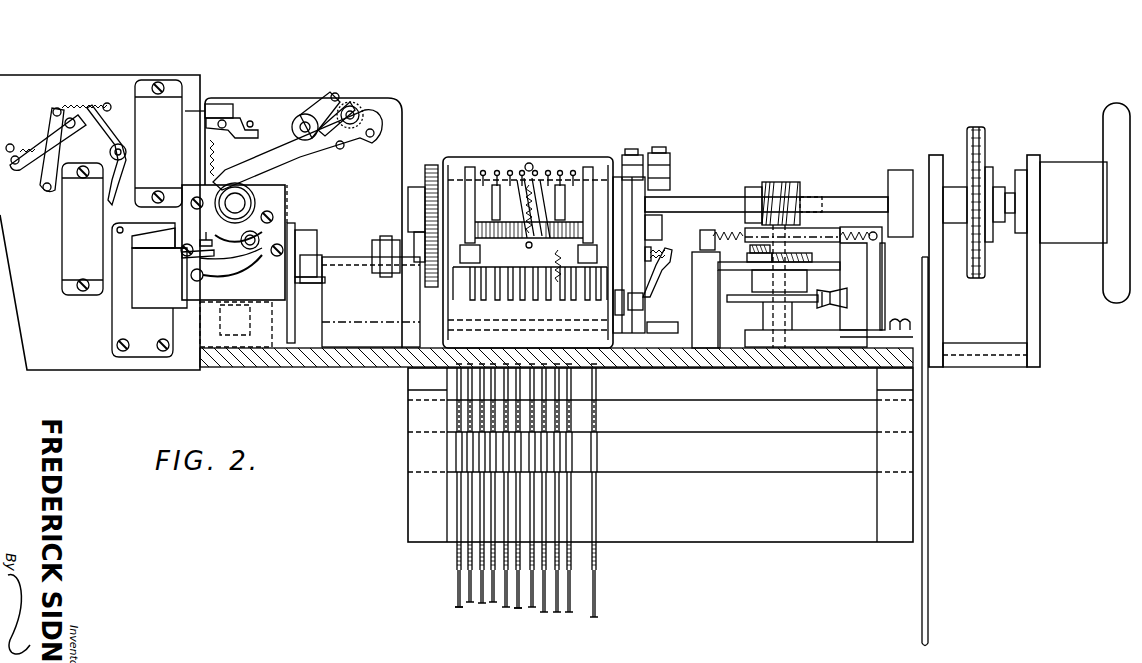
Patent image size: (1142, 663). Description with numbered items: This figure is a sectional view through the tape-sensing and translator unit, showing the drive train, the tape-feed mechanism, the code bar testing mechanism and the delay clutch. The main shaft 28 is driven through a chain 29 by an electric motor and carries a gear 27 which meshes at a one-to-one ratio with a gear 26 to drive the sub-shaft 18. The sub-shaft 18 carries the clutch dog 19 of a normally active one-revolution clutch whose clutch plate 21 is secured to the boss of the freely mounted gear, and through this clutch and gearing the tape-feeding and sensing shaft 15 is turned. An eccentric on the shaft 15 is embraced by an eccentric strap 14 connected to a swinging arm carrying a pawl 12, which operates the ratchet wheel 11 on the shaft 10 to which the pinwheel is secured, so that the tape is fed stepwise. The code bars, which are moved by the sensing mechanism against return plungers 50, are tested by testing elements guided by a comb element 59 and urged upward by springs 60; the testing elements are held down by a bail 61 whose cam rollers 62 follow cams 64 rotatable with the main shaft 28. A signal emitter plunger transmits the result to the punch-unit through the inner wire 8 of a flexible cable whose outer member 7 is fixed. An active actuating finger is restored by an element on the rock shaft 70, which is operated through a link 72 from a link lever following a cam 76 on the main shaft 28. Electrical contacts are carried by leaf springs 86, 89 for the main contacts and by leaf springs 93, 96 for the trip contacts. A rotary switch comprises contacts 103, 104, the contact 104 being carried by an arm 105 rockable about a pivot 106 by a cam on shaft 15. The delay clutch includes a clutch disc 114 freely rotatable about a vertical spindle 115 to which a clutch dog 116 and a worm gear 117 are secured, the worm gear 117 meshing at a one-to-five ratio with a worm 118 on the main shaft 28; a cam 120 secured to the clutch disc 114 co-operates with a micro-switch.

The outer member 7 is at (469, 571).
The inner wire 8 is at (519, 607).
The shaft 10 is at (343, 127).
The ratchet wheel 11 is at (403, 121).
The pawl 12 is at (352, 125).
The eccentric strap 14 is at (323, 157).
The tape-feeding and sensing shaft 15 is at (237, 200).
The sub-shaft 18 is at (355, 250).
The clutch dog 19 is at (312, 272).
The clutch plate 21 is at (281, 205).
The gear 26 is at (422, 277).
The gear 27 is at (432, 165).
The main shaft 28 is at (713, 200).
The chain 29 is at (985, 131).
The return plunger 50 is at (670, 252).
The comb element 59 is at (597, 350).
The spring 60 is at (533, 185).
The bail 61 is at (530, 270).
The cam roller 62 is at (481, 257).
The cam 64 is at (470, 167).
The rock shaft 70 is at (668, 335).
The link 72 is at (644, 301).
The cam 76 is at (625, 232).
The leaf spring 86 is at (671, 167).
The leaf spring 89 is at (668, 155).
The leaf spring 93 is at (636, 172).
The leaf spring 96 is at (632, 160).
The contact 103 is at (207, 242).
The contact 104 is at (207, 253).
The arm 105 is at (235, 250).
The pivot 106 is at (262, 232).
The clutch disc 114 is at (841, 233).
The vertical spindle 115 is at (777, 350).
The clutch dog 116 is at (805, 258).
The worm gear 117 is at (807, 197).
The worm 118 is at (773, 182).
The cam 120 is at (733, 345).